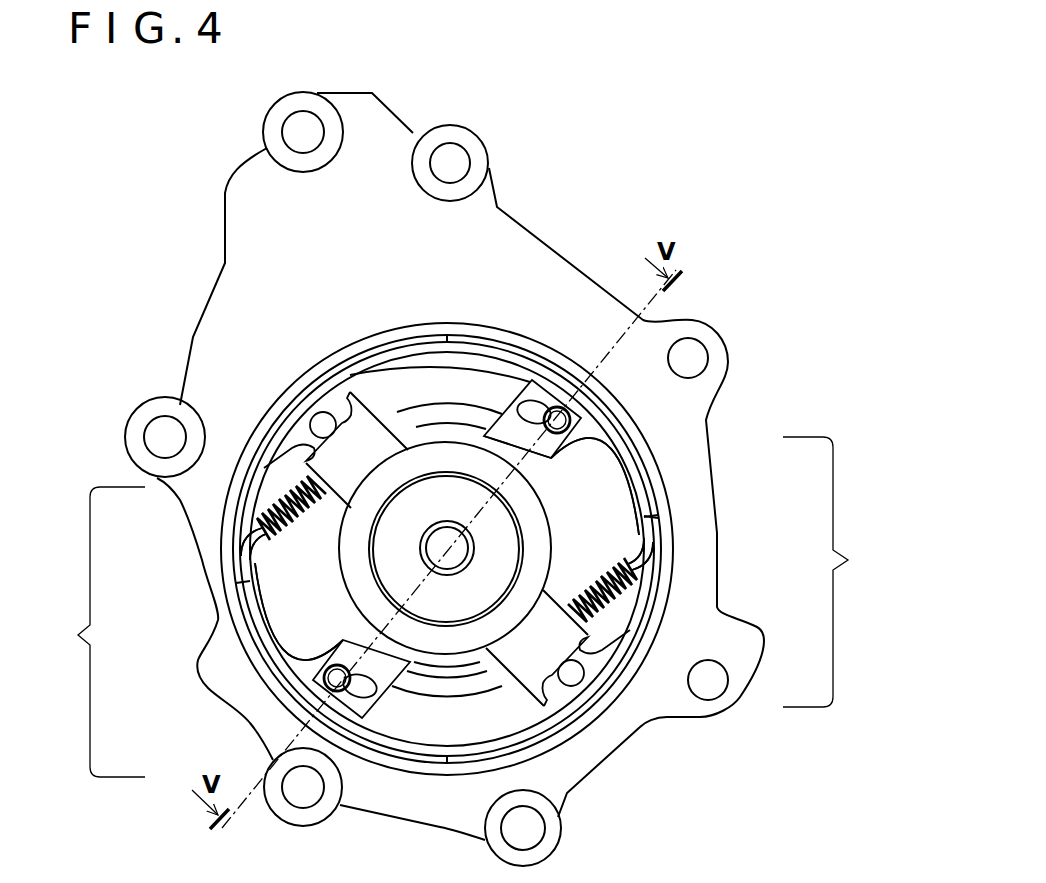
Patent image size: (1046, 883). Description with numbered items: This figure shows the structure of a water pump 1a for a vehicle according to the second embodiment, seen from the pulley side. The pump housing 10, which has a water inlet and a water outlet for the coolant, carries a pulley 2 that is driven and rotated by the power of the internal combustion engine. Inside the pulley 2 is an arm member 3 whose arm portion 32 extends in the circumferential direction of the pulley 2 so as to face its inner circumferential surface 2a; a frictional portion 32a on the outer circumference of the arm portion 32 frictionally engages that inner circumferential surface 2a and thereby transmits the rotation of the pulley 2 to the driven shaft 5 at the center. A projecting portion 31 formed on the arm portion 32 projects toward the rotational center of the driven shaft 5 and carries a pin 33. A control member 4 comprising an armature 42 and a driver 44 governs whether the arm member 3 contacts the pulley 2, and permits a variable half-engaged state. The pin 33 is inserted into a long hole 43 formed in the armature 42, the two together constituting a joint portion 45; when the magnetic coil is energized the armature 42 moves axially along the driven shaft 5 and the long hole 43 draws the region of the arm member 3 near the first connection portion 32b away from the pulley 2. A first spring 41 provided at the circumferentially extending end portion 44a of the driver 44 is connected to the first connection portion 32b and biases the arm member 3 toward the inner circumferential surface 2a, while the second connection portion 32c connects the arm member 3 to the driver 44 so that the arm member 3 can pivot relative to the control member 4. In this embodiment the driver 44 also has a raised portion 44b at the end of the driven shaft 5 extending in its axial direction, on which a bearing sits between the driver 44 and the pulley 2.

The water pump 1a is at (527, 172).
The pump housing 10 is at (270, 215).
The pulley 2 is at (262, 440).
The inner circumferential surface 2a is at (305, 390).
The arm member 3 is at (100, 632).
The projecting portion 31 is at (330, 683).
The arm portion 32 is at (275, 651).
The frictional portion 32a is at (262, 612).
The first connection portion 32b is at (243, 582).
The second connection portion 32c is at (318, 428).
The pin 33 is at (250, 558).
The control member 4 is at (825, 572).
The first spring 41 is at (620, 602).
The armature 42 is at (497, 556).
The long hole 43 is at (560, 473).
The driver 44 is at (540, 645).
The end portion 44a is at (615, 630).
The raised portion 44b is at (648, 574).
The joint portion 45 is at (581, 446).
The driven shaft 5 is at (442, 542).